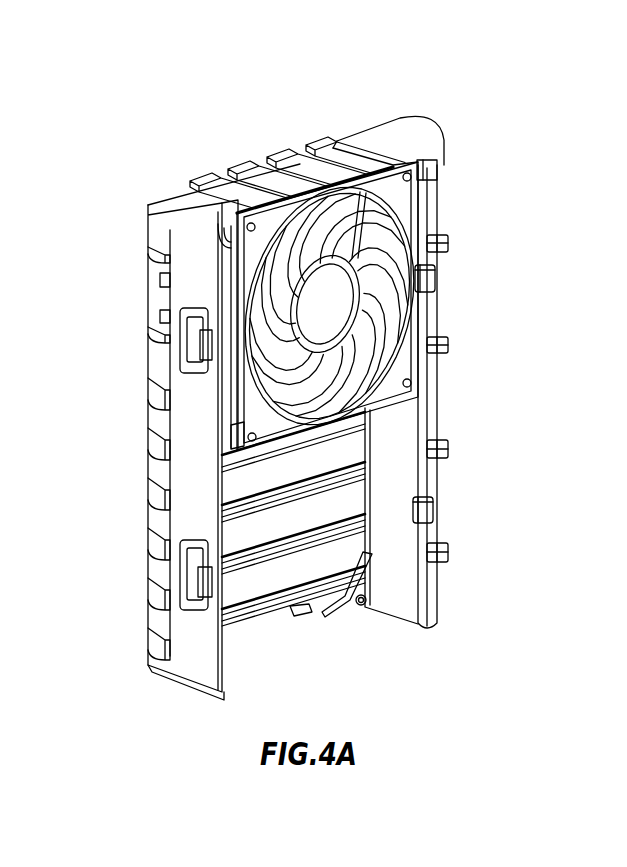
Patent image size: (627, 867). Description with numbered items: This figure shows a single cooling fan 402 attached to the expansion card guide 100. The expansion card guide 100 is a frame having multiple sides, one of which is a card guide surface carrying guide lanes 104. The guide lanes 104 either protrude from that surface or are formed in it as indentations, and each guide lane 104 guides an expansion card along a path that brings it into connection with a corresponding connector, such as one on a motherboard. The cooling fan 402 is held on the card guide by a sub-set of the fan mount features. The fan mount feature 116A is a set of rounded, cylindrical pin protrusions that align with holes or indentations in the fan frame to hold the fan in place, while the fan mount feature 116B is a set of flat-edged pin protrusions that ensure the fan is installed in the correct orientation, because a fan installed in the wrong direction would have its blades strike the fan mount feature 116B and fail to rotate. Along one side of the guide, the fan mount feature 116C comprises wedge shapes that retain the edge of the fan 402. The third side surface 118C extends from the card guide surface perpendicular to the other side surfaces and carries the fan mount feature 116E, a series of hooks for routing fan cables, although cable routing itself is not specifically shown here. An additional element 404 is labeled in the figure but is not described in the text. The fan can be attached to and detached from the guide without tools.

The expansion card guide 100 is at (185, 685).
The guide lanes 104 is at (350, 507).
The fan mount feature 116A is at (362, 604).
The fan mount feature 116B is at (307, 613).
The fan mount feature 116C is at (437, 280).
The fan mount feature 116E is at (307, 140).
The third side surface 118C is at (393, 137).
The cooling fan 402 is at (447, 367).
The fan bracket 404 is at (240, 433).